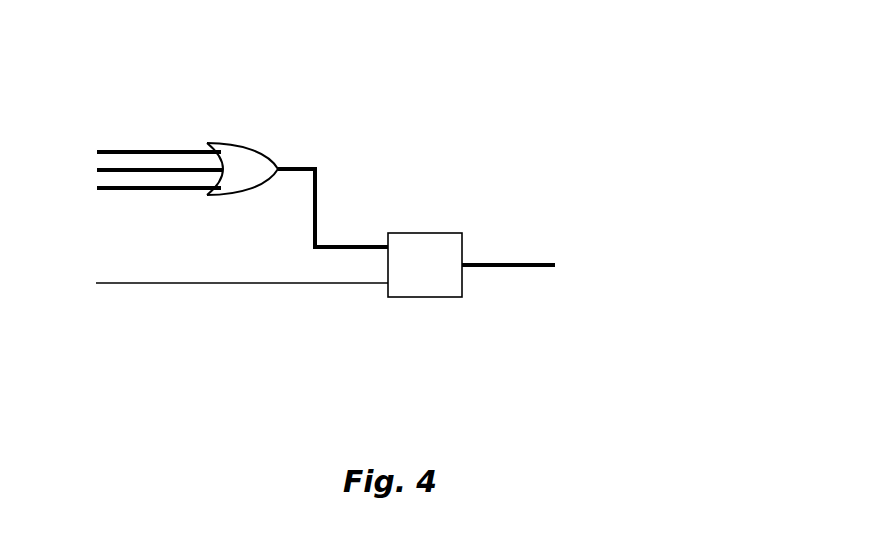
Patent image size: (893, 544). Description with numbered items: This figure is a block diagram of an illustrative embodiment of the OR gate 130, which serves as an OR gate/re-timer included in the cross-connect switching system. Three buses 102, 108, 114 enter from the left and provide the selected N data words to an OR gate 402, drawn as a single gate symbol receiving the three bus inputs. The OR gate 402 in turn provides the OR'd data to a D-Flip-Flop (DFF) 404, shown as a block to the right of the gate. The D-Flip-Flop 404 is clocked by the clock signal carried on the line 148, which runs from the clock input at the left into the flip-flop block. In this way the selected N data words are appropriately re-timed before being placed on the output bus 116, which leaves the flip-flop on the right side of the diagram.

The OR gate 130 is at (503, 115).
The bus 102 is at (133, 150).
The bus 108 is at (178, 168).
The bus 114 is at (133, 191).
The OR gate 402 is at (262, 144).
The D-Flip-Flop (DFF) 404 is at (446, 291).
The line 148 is at (200, 285).
The output bus 116 is at (596, 264).